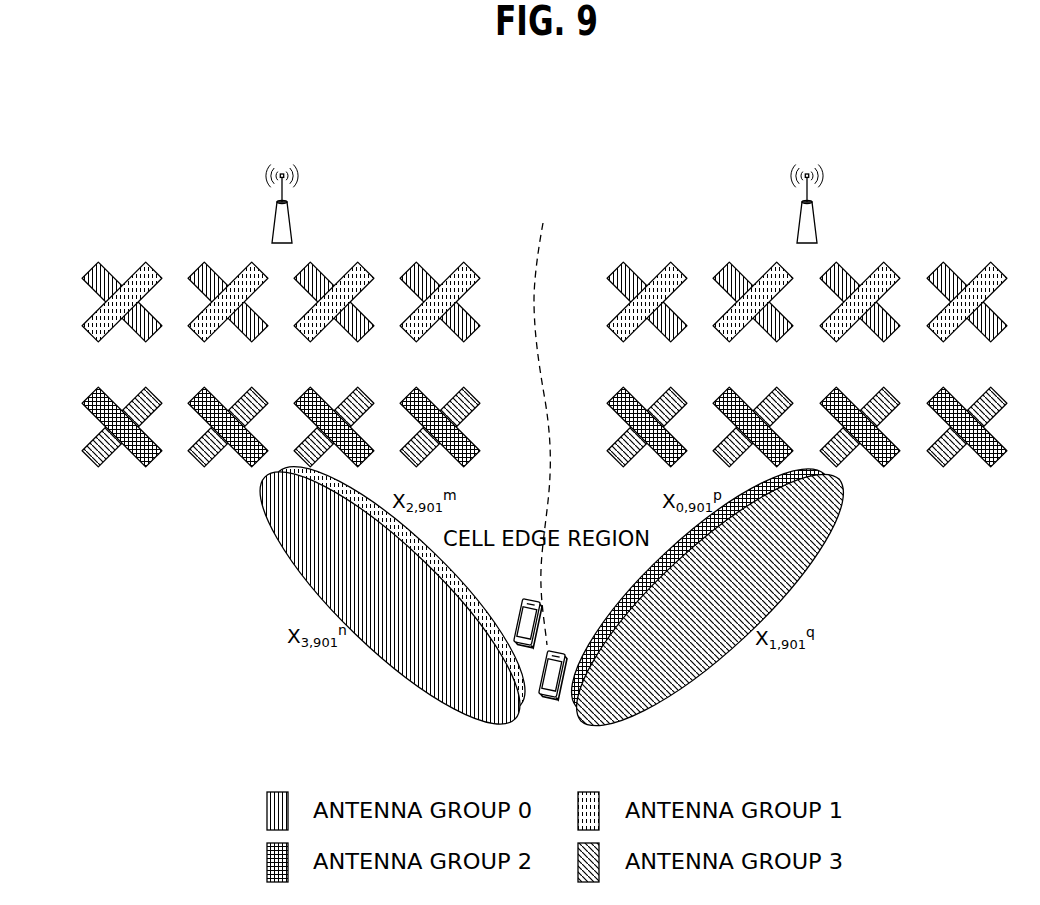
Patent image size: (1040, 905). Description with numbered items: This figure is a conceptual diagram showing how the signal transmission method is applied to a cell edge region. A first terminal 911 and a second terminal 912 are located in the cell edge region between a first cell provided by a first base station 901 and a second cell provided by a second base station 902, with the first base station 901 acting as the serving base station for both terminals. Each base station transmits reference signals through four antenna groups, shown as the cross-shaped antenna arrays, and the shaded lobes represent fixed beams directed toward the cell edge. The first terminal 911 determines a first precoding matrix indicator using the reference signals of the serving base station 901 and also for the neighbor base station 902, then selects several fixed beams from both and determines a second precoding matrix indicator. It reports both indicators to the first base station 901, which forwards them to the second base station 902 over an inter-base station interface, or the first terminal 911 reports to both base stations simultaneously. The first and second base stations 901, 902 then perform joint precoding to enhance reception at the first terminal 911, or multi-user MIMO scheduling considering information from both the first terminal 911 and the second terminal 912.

The first base station 901 is at (289, 213).
The second base station 902 is at (812, 213).
The first terminal 911 is at (545, 697).
The second terminal 912 is at (533, 603).